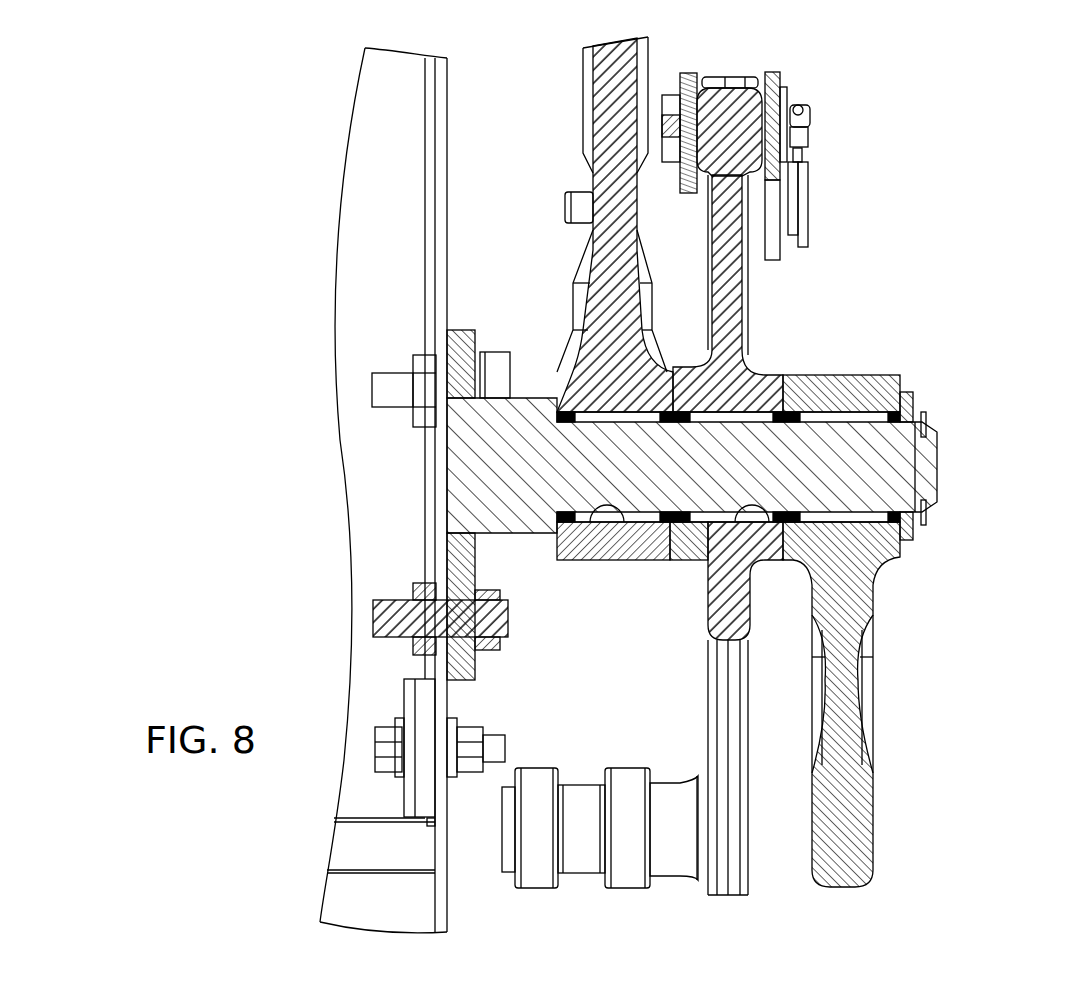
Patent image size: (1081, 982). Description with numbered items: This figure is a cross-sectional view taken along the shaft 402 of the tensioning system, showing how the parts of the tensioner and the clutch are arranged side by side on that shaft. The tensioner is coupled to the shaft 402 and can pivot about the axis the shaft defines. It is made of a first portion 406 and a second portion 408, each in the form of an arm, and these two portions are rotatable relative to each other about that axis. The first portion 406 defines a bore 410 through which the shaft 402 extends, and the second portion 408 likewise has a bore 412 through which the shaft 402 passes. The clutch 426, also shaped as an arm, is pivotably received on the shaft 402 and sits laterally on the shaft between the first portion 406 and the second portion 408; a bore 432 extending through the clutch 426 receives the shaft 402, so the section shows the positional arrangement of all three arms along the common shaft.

The shaft 402 is at (863, 465).
The first portion 406 is at (607, 388).
The second portion 408 is at (823, 390).
The bore 410 is at (595, 560).
The bore 412 is at (870, 560).
The clutch 426 is at (755, 362).
The bore 432 is at (707, 560).